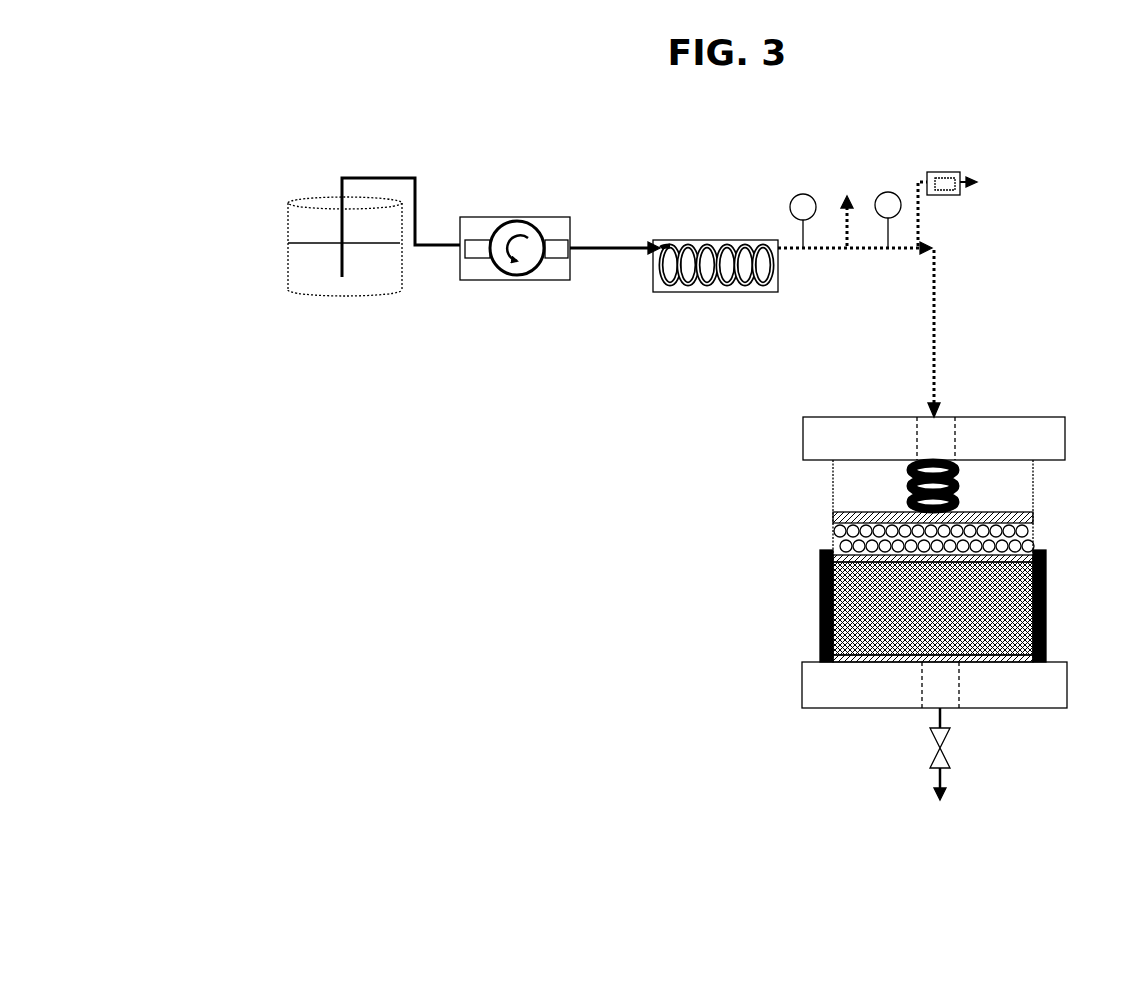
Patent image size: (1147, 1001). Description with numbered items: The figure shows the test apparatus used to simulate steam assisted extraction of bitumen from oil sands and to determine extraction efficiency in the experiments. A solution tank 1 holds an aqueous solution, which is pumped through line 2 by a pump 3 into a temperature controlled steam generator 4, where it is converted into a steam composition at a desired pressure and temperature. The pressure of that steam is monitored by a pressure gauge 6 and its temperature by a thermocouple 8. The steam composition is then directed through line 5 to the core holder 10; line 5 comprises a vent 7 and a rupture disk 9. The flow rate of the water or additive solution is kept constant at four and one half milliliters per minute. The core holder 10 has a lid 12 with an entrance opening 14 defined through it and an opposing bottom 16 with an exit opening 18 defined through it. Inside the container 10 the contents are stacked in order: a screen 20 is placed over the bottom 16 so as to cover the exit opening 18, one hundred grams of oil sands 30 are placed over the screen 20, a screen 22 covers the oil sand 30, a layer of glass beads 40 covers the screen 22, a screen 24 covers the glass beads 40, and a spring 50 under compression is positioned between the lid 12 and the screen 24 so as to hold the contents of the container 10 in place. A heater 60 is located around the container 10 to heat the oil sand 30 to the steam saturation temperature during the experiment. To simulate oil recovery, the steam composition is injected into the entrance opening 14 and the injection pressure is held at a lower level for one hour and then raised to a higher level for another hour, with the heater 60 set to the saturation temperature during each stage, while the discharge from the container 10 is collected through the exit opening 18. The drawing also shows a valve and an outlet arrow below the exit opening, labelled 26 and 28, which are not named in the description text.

The solution tank 1 is at (283, 224).
The line 2 is at (385, 178).
The pump 3 is at (505, 217).
The temperature controlled steam generator 4 is at (710, 291).
The line 5 is at (862, 262).
The pressure gauge 6 is at (797, 193).
The vent 7 is at (845, 191).
The thermocouple 8 is at (883, 191).
The rupture disk 9 is at (945, 170).
The core holder 10 is at (830, 490).
The lid 12 is at (810, 437).
The entrance opening 14 is at (921, 420).
The bottom 16 is at (812, 680).
The exit opening 18 is at (929, 694).
The screen 20 is at (992, 662).
The screen 22 is at (1040, 553).
The screen 24 is at (1035, 513).
The valve 26 is at (925, 750).
The effluent outlet 28 is at (945, 782).
The oil sands 30 is at (1046, 585).
The layer of glass beads 40 is at (830, 543).
The spring 50 is at (960, 468).
The heater 60 is at (820, 597).